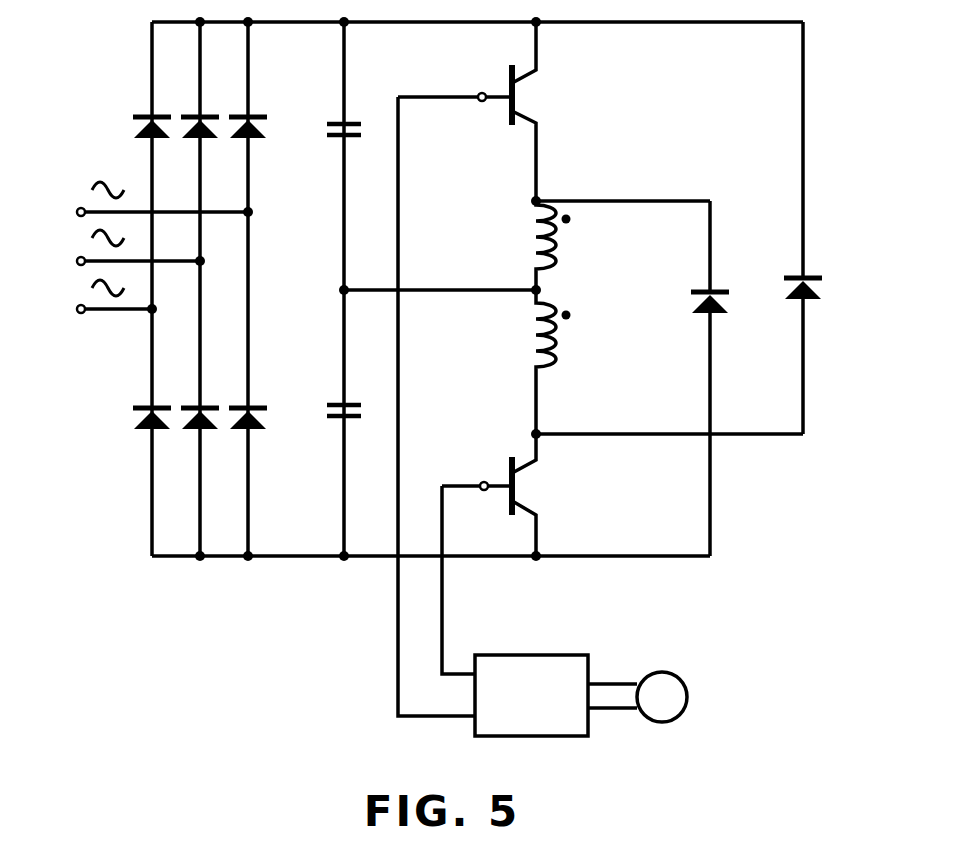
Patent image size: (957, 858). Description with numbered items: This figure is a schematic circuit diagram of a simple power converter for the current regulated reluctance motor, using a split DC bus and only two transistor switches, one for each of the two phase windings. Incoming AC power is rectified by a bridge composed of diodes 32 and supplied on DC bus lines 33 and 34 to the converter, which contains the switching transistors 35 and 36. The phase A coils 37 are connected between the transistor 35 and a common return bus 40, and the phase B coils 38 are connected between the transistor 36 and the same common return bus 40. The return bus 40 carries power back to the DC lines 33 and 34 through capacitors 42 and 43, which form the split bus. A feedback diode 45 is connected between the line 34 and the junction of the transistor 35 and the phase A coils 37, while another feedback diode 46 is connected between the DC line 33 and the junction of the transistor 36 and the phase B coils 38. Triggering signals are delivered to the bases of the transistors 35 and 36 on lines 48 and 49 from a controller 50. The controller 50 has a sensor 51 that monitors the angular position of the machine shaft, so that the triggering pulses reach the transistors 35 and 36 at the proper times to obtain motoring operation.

The diodes 32 is at (235, 115).
The DC bus line 33 is at (468, 23).
The DC bus line 34 is at (290, 557).
The switching transistor 35 is at (508, 115).
The switching transistor 36 is at (508, 468).
The phase A coils 37 is at (558, 237).
The phase B coils 38 is at (558, 343).
The common return bus 40 is at (472, 293).
The capacitor 42 is at (333, 120).
The capacitor 43 is at (331, 401).
The feedback diode 45 is at (722, 290).
The feedback diode 46 is at (808, 273).
The line 48 is at (398, 628).
The line 49 is at (443, 620).
The controller 50 is at (558, 654).
The sensor 51 is at (673, 667).